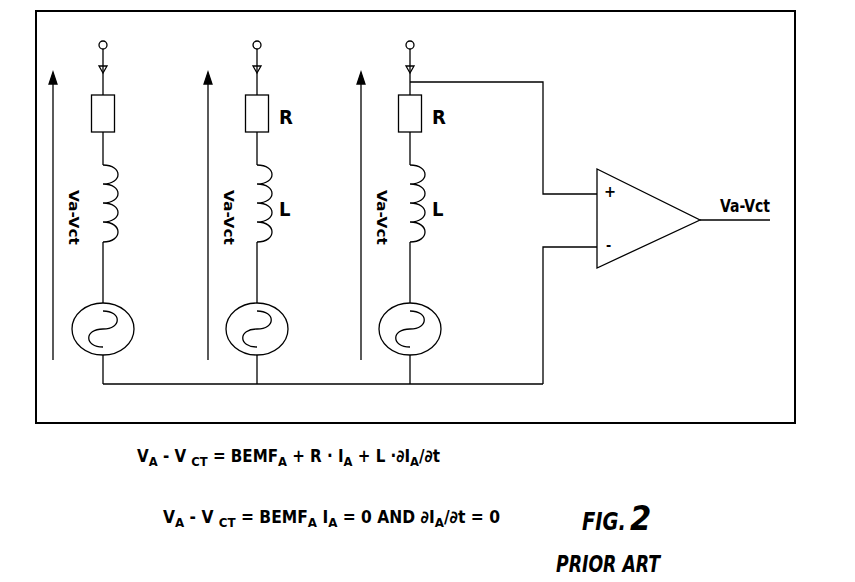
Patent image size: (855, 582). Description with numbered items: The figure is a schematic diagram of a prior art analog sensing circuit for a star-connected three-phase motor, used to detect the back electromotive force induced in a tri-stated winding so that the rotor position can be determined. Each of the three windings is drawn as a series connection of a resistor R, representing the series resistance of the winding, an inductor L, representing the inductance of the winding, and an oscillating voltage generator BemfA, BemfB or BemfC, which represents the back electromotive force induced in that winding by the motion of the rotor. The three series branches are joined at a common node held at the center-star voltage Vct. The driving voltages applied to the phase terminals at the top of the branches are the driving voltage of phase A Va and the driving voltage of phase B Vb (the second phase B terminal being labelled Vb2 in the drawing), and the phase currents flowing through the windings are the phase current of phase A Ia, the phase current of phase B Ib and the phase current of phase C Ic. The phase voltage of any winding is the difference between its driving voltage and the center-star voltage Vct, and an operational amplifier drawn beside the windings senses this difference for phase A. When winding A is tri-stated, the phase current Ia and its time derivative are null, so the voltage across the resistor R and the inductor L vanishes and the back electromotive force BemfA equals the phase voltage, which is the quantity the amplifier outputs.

The resistor R is at (116, 113).
The inductor L is at (119, 203).
The driving voltage of phase B Vb is at (103, 56).
The phase B supply voltage terminal (second branch) Vb2 is at (257, 56).
The driving voltage of phase A Va is at (410, 56).
The phase current of phase C Ic is at (123, 69).
The phase current of phase B Ib is at (277, 70).
The phase current of phase A Ia is at (430, 70).
The oscillating voltage generator of phase C BemfC is at (128, 331).
The oscillating voltage generator of phase B BemfB is at (282, 331).
The oscillating voltage generator of phase A BemfA is at (435, 331).
The center-star voltage Vct is at (323, 396).